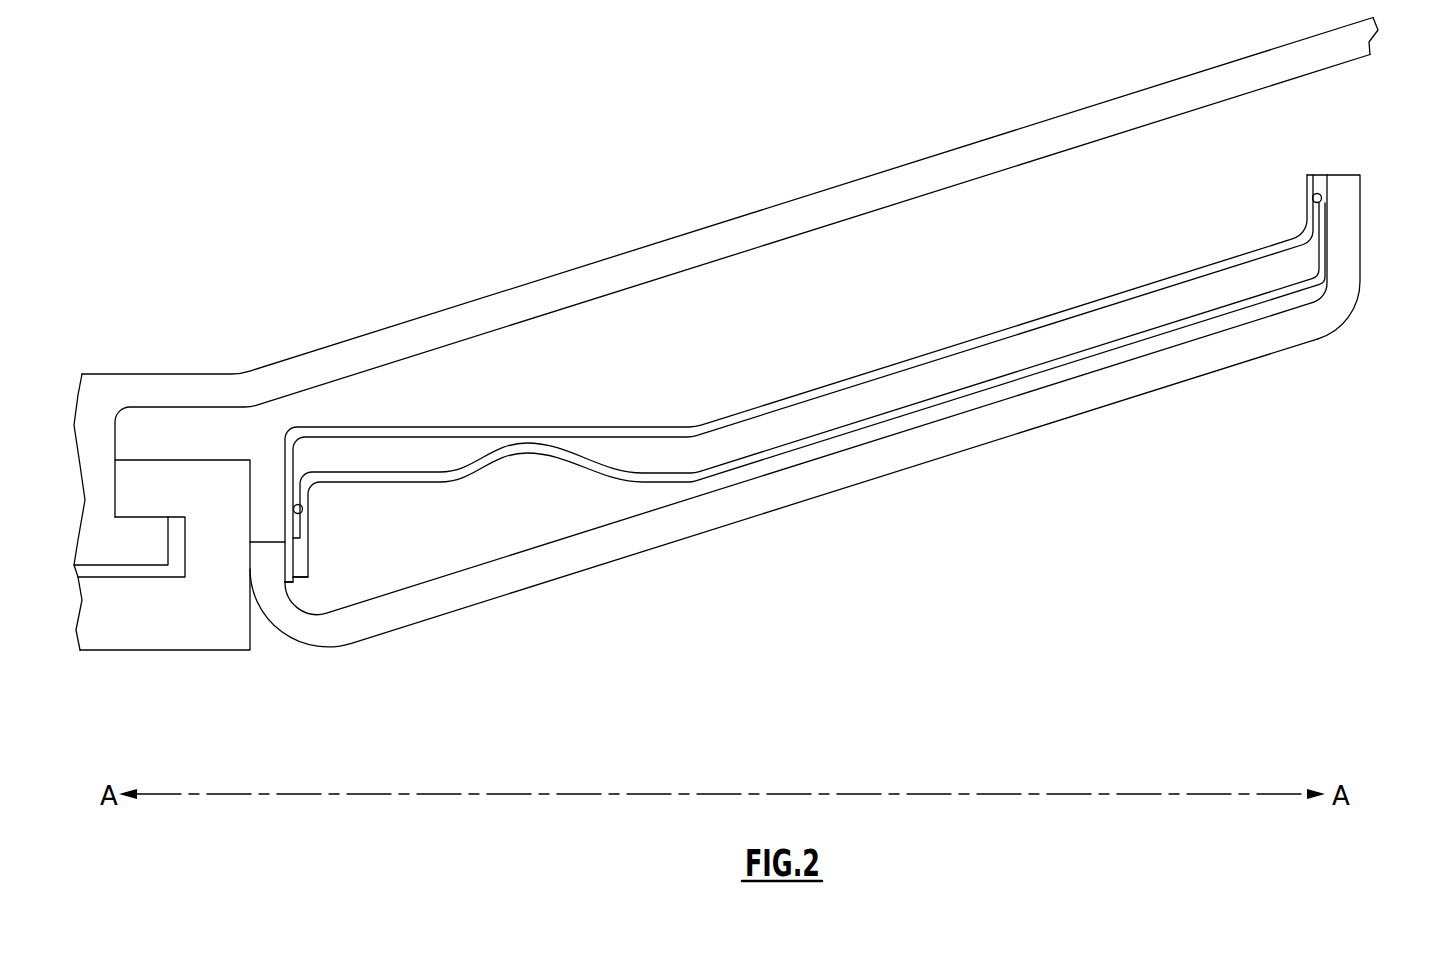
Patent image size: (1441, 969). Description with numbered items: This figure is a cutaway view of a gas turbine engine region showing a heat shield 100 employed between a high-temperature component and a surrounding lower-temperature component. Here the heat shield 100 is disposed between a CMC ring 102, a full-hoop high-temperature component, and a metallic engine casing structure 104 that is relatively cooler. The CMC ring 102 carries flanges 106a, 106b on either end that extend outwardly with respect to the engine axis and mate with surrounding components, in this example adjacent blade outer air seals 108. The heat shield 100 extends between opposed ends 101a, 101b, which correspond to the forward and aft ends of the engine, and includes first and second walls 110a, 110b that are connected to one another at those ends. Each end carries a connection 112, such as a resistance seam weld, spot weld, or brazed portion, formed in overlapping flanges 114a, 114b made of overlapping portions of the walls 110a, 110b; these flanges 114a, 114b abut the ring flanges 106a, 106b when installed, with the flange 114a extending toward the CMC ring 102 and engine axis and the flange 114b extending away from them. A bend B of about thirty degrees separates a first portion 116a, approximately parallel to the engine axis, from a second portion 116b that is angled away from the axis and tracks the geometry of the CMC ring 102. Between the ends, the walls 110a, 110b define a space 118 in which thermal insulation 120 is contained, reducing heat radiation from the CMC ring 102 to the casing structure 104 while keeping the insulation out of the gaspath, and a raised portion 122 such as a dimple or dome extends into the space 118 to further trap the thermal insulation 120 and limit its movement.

The heat shield 100 is at (1022, 252).
The opposed end 101a is at (337, 533).
The opposed end 101b is at (1293, 159).
The CMC ring 102 is at (897, 450).
The metallic engine casing structure 104 is at (893, 184).
The flange 106a is at (258, 565).
The flange 106b is at (1345, 233).
The blade outer air seal 108 is at (132, 632).
The first wall 110a is at (648, 478).
The second wall 110b is at (684, 426).
The connection 112 is at (303, 509).
The flange 114a is at (268, 508).
The flange 114b is at (1289, 216).
The first portion 116a is at (489, 402).
The second portion 116b is at (912, 318).
The space 118 is at (402, 468).
The thermal insulation 120 is at (444, 458).
The raised portion 122 is at (587, 450).
The bend B is at (690, 346).